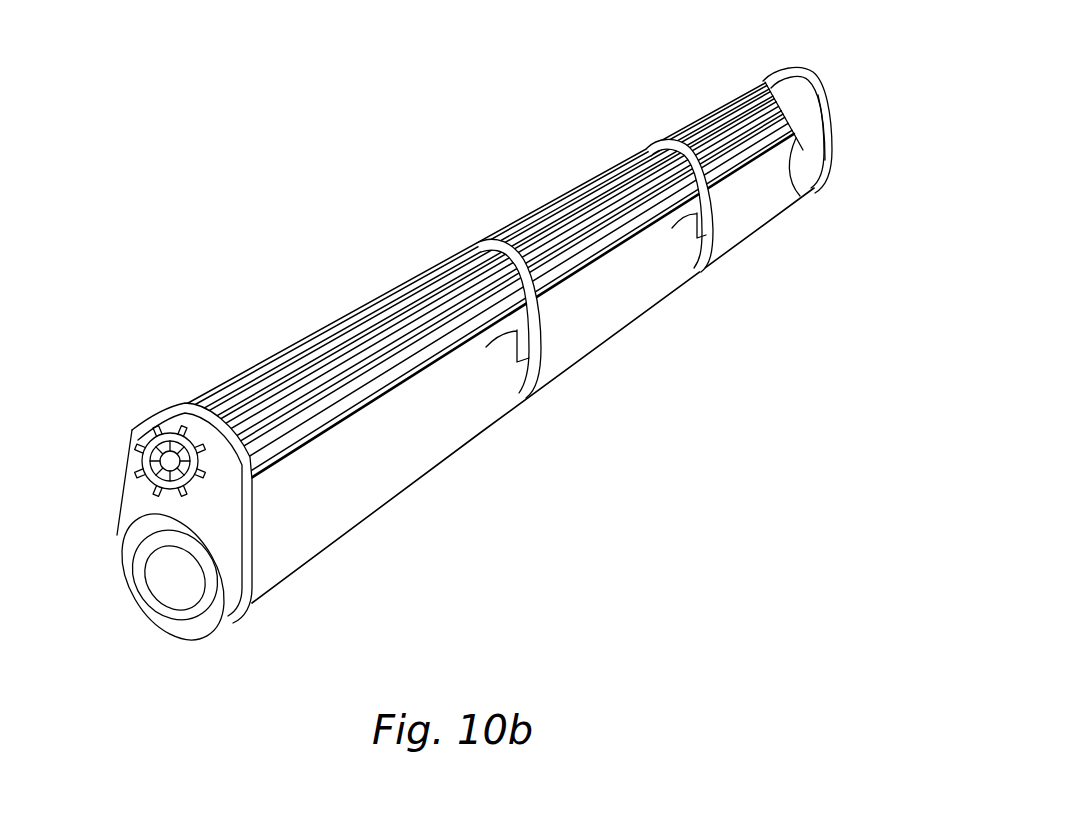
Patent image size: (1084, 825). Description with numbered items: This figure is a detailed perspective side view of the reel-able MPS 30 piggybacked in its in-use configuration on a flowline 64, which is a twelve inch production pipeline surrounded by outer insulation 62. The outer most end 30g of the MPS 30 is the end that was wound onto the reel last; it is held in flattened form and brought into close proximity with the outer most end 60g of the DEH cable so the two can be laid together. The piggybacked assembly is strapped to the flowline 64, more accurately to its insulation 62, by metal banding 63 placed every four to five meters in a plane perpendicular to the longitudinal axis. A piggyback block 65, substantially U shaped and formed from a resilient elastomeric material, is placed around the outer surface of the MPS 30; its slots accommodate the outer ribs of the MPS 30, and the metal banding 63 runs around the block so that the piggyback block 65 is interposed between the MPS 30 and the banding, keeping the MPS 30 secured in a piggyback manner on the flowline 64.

The reel-able MPS 30 is at (330, 323).
The outer most end of the MPS 30g is at (132, 430).
The outer most end of the DEH cable 60g is at (165, 462).
The outer insulation 62 is at (225, 603).
The metal banding 63 is at (828, 186).
The flowline 64 is at (183, 612).
The piggyback block 65 is at (662, 140).